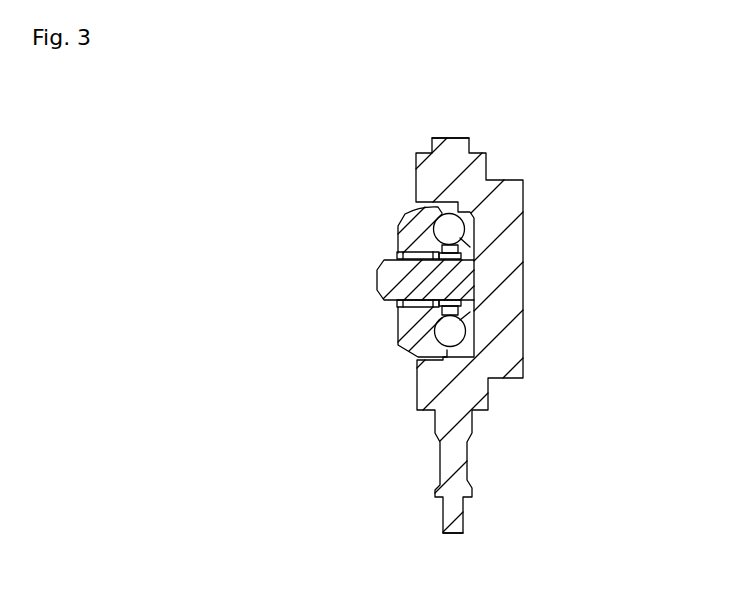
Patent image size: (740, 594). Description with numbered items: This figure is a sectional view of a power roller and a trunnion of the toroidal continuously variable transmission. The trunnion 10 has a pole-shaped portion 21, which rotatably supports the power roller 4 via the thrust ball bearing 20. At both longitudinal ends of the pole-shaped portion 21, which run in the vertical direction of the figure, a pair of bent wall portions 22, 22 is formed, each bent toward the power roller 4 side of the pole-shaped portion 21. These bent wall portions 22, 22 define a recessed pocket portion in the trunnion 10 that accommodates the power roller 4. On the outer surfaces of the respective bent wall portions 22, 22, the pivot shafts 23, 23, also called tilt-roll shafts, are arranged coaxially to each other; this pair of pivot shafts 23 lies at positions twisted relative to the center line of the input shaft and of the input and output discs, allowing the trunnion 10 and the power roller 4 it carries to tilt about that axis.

The trunnion 10 is at (515, 324).
The thrust ball bearing 20 is at (418, 236).
The power roller 4 is at (410, 230).
The pole-shaped portion 21 is at (513, 237).
The bent wall portion 22 is at (470, 190).
The pivot shaft 23 is at (482, 167).